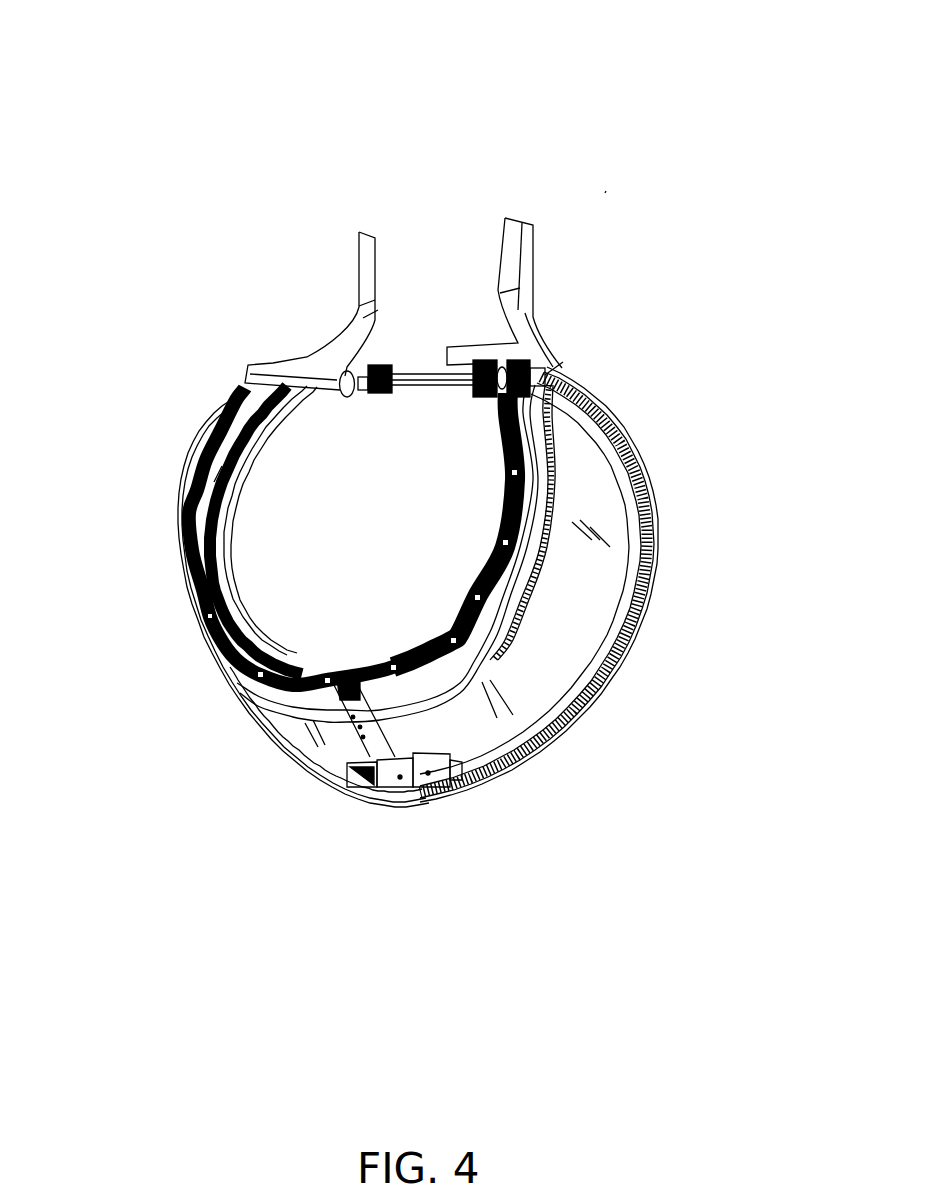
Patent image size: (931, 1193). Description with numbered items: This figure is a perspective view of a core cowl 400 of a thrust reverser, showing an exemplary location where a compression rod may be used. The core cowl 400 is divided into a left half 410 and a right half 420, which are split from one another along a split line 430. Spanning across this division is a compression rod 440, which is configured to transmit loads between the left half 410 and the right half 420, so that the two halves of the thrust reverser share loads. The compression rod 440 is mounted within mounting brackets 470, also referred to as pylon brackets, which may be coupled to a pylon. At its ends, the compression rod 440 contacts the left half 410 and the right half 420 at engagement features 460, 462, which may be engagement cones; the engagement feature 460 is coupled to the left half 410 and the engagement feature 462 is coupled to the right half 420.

The core cowl 400 is at (608, 190).
The left half 410 is at (223, 687).
The right half 420 is at (613, 677).
The split line 430 is at (423, 800).
The compression rod 440 is at (433, 373).
The engagement feature 460 is at (343, 397).
The engagement feature 462 is at (563, 360).
The mounting brackets 470 is at (385, 395).